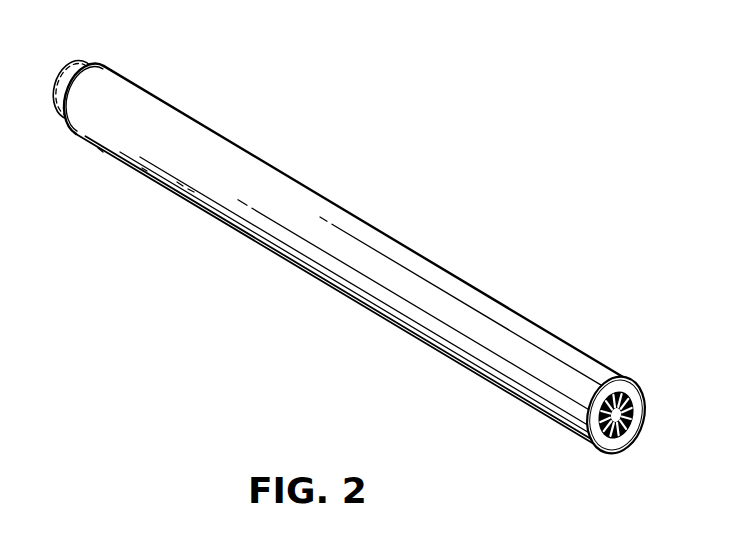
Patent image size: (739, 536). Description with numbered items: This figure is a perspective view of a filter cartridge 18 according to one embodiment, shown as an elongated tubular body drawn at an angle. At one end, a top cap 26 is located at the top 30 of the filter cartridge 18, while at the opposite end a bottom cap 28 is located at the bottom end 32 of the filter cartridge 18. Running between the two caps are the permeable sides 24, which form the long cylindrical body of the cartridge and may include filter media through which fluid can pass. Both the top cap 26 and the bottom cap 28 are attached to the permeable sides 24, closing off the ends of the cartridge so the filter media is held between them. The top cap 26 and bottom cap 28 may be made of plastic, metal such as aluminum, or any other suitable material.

The filter cartridge 18 is at (296, 109).
The permeable sides 24 is at (352, 232).
The top cap 26 is at (85, 66).
The bottom cap 28 is at (619, 377).
The top 30 is at (124, 86).
The bottom end 32 is at (556, 336).